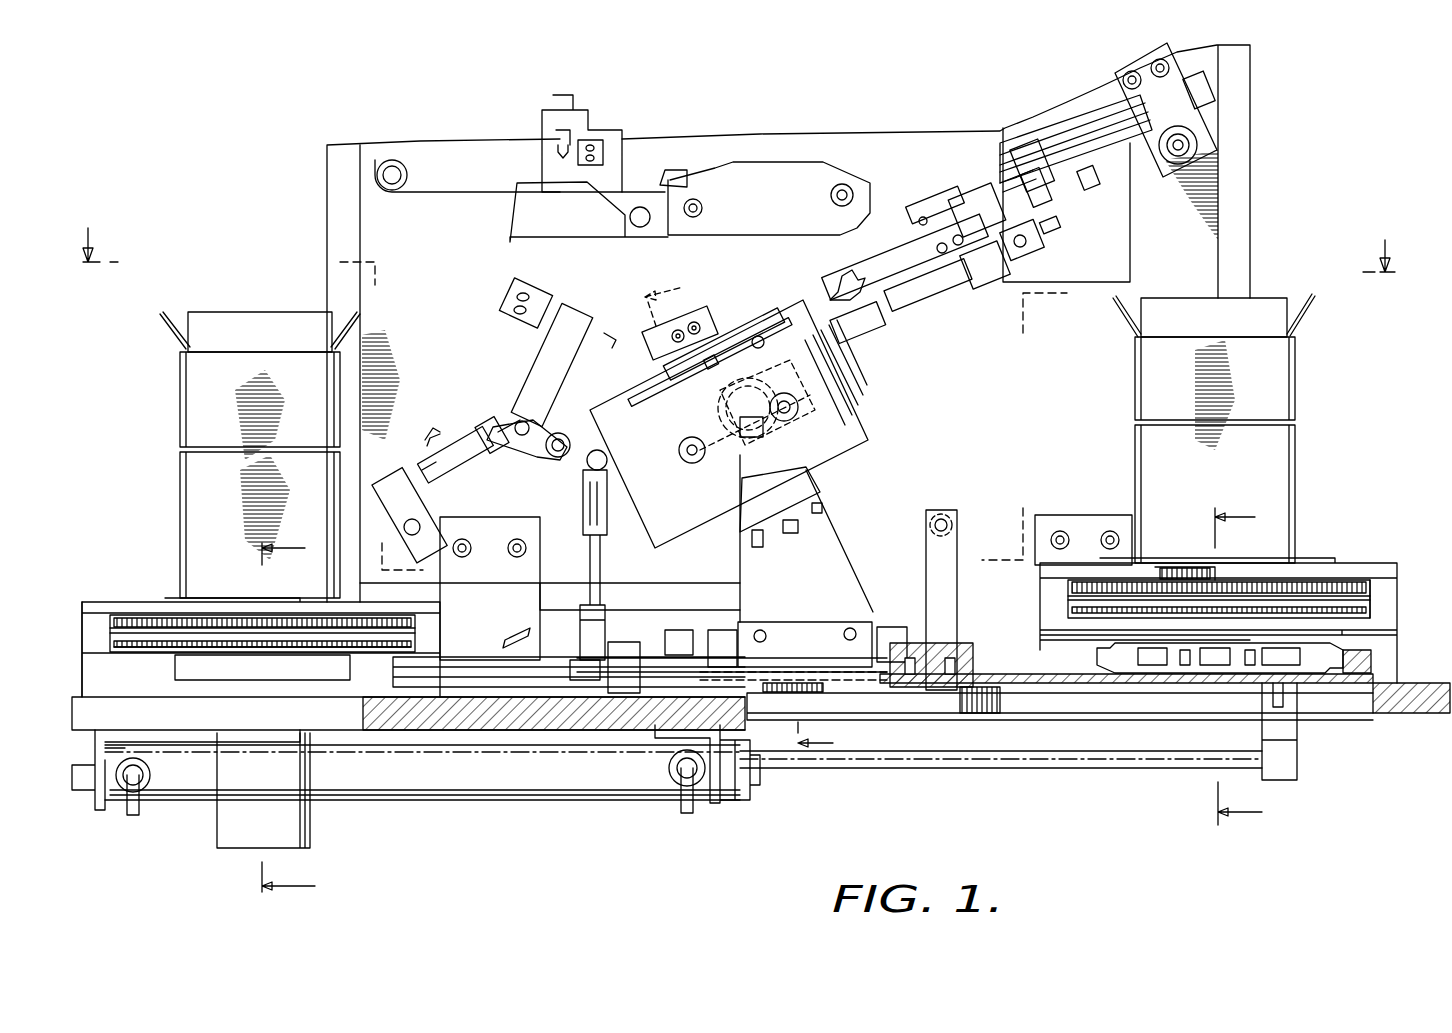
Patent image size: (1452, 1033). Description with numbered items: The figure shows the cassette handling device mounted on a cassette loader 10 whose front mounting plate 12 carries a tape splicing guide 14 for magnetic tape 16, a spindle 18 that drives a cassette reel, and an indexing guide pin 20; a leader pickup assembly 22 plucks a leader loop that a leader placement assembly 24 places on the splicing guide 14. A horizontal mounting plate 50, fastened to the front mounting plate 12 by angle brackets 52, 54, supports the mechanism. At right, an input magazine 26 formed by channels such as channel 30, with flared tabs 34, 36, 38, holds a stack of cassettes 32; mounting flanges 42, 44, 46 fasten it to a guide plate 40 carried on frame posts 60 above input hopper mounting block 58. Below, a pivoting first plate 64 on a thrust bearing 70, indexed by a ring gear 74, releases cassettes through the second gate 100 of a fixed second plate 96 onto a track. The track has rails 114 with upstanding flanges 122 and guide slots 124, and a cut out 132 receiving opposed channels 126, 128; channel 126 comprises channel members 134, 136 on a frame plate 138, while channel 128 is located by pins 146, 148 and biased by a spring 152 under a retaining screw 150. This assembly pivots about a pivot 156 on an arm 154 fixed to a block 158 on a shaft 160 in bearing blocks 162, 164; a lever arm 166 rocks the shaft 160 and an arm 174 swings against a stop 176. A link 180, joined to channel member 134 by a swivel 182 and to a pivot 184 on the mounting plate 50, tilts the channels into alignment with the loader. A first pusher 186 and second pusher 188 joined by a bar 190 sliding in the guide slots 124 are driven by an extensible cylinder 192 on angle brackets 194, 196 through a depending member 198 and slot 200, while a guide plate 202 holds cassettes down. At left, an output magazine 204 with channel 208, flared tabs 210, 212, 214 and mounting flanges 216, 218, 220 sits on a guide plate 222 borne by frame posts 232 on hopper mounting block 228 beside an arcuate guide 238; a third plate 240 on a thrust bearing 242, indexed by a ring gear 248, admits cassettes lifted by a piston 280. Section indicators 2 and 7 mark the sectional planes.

The section line 2- 2 is at (737, 233).
The section line 7- 7 is at (1238, 664).
The cassette loader 10 is at (887, 133).
The front mounting plate 12 is at (790, 132).
The tape splicing guide 14 is at (762, 252).
The magnetic tape 16 is at (437, 190).
The spindle 18 is at (679, 448).
The guide pin 20 is at (680, 384).
The leader pickup assembly 22 is at (545, 358).
The leader placement assembly 24 is at (915, 256).
The input magazine 26 is at (1297, 403).
The channel 30 is at (1267, 343).
The stack of cassettes 32 is at (1108, 162).
The flared tab 34 is at (1112, 320).
The flared tab 36 is at (1172, 298).
The flared tab 38 is at (1298, 295).
The guide plate 40 is at (1395, 565).
The mounting flange 42 is at (1115, 560).
The mounting flange 44 is at (1160, 560).
The mounting flange 46 is at (1315, 560).
The mounting plate 50 is at (1415, 705).
The angle bracket 52 is at (470, 517).
The angle bracket 54 is at (1068, 515).
The input hopper mounting block 58 is at (1397, 614).
The frame posts 60 is at (1390, 587).
The first plate 64 is at (1068, 605).
The thrust bearing 70 is at (1068, 615).
The ring gear 74 is at (1068, 590).
The second plate 96 is at (1397, 635).
The second gate 100 is at (1097, 640).
The rail 114 is at (1015, 705).
The upstanding flange 122 is at (480, 645).
The guide slot 124 is at (857, 685).
The opposed channel 126 is at (762, 313).
The opposed channel 128 is at (835, 478).
The cut out 132 is at (805, 657).
The channel member 134 is at (603, 400).
The channel member 136 is at (700, 320).
The frame plate 138 is at (623, 472).
The pin 146 is at (750, 542).
The pin 148 is at (840, 512).
The retaining screw 150 is at (827, 551).
The spring 152 is at (765, 530).
The arm 154 is at (735, 553).
The pivot 156 is at (850, 372).
The block 158 is at (848, 612).
The shaft 160 is at (700, 630).
The bearing block 162 is at (740, 628).
The bearing block 164 is at (893, 627).
The lever arm 166 is at (665, 645).
The arm 174 is at (960, 540).
The stop 176 is at (918, 512).
The link 180 is at (590, 567).
The swivel 182 is at (582, 470).
The pivot 184 is at (583, 702).
The first pusher 186 is at (1380, 665).
The second pusher 188 is at (915, 690).
The bar 190 is at (1225, 685).
The extensible cylinder 192 is at (633, 800).
The angle bracket 194 is at (105, 812).
The angle bracket 196 is at (716, 805).
The member 198 is at (1290, 777).
The slot 200 is at (1127, 697).
The guide plate 202 is at (520, 630).
The output magazine 204 is at (180, 386).
The channel 208 is at (185, 478).
The flared tab 210 is at (160, 315).
The flared tab 212 is at (215, 312).
The flared tab 214 is at (355, 315).
The mounting flange 216 is at (165, 598).
The mounting flange 218 is at (200, 600).
The mounting flange 220 is at (355, 592).
The guide plate 222 is at (100, 602).
The hopper mounting block 228 is at (150, 690).
The frame posts 232 is at (100, 647).
The guide 238 is at (273, 677).
The third plate 240 is at (192, 630).
The thrust bearing 242 is at (285, 642).
The ring gear 248 is at (235, 615).
The piston 280 is at (312, 835).